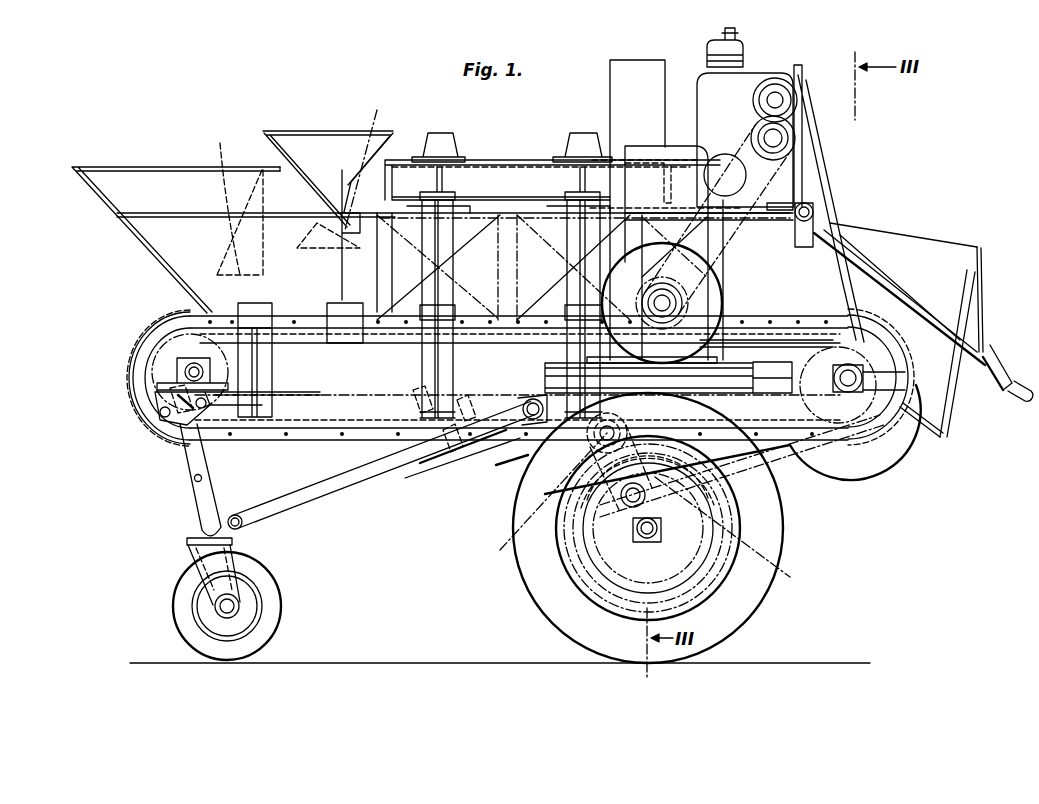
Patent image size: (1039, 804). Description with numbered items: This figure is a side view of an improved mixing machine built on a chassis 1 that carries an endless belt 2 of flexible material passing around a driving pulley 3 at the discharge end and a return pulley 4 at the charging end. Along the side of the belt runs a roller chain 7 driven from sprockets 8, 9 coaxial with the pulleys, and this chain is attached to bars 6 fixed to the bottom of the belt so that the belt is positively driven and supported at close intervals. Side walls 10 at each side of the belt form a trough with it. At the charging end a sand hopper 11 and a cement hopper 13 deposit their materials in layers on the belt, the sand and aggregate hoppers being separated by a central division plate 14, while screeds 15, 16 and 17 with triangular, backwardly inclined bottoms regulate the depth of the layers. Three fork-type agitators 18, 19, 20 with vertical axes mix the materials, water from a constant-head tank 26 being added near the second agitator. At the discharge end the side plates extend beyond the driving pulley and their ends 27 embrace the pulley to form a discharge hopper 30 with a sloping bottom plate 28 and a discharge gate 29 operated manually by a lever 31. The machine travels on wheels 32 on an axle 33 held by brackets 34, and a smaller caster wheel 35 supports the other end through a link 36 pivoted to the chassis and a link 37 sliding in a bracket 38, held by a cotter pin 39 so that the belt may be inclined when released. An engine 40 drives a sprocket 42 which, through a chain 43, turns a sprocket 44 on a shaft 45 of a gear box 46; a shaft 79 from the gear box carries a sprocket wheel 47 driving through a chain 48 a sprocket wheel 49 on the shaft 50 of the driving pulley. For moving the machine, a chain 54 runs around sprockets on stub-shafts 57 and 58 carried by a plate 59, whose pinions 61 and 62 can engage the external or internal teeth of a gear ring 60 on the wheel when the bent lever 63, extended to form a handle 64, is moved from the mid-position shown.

The chassis 1 is at (330, 407).
The endless belt 2 is at (318, 323).
The driving pulley 3 is at (887, 432).
The return pulley 4 is at (217, 407).
The bars or rods 6 is at (377, 335).
The roller chain 7 is at (140, 347).
The sprocket 8 is at (810, 382).
The sprocket 9 is at (187, 347).
The side walls 10 is at (907, 238).
The sand hopper 11 is at (147, 192).
The cement hopper 13 is at (298, 147).
The central division plate 14 is at (102, 192).
The screed 15 is at (330, 253).
The screed 16 is at (235, 199).
The screed 17 is at (369, 159).
The agitator 18 is at (473, 227).
The agitator 19 is at (543, 233).
The agitator 20 is at (780, 255).
The water tank 26 is at (628, 83).
The ends of side plates 27 is at (927, 397).
The bottom plate 28 is at (938, 437).
The discharge gate 29 is at (980, 255).
The discharge hopper 30 is at (913, 280).
The lever 31 is at (993, 390).
The wheels 32 is at (732, 602).
The axle 33 is at (647, 542).
The brackets 34 is at (731, 533).
The caster wheel 35 is at (267, 617).
The link 36 is at (383, 463).
The link 37 is at (200, 460).
The bracket 38 is at (157, 423).
The cotter pin 39 is at (183, 417).
The engine 40 is at (640, 298).
The sprocket 42 is at (707, 285).
The chain 43 is at (664, 259).
The sprocket 44 is at (782, 157).
The shaft 45 is at (795, 137).
The gear box 46 is at (735, 100).
The sprocket wheel 47 is at (796, 92).
The chain 48 is at (823, 188).
The sprocket wheel 49 is at (867, 387).
The shaft 50 is at (847, 365).
The chain 54 is at (777, 463).
The stub-shaft 57 is at (587, 437).
The stub-shaft 58 is at (625, 513).
The plate 59 is at (545, 498).
The gear ring 60 is at (603, 580).
The pinion 61 is at (553, 377).
The pinion 62 is at (668, 508).
The bent lever 63 is at (503, 450).
The handle 64 is at (393, 392).
The shaft 79 is at (783, 104).